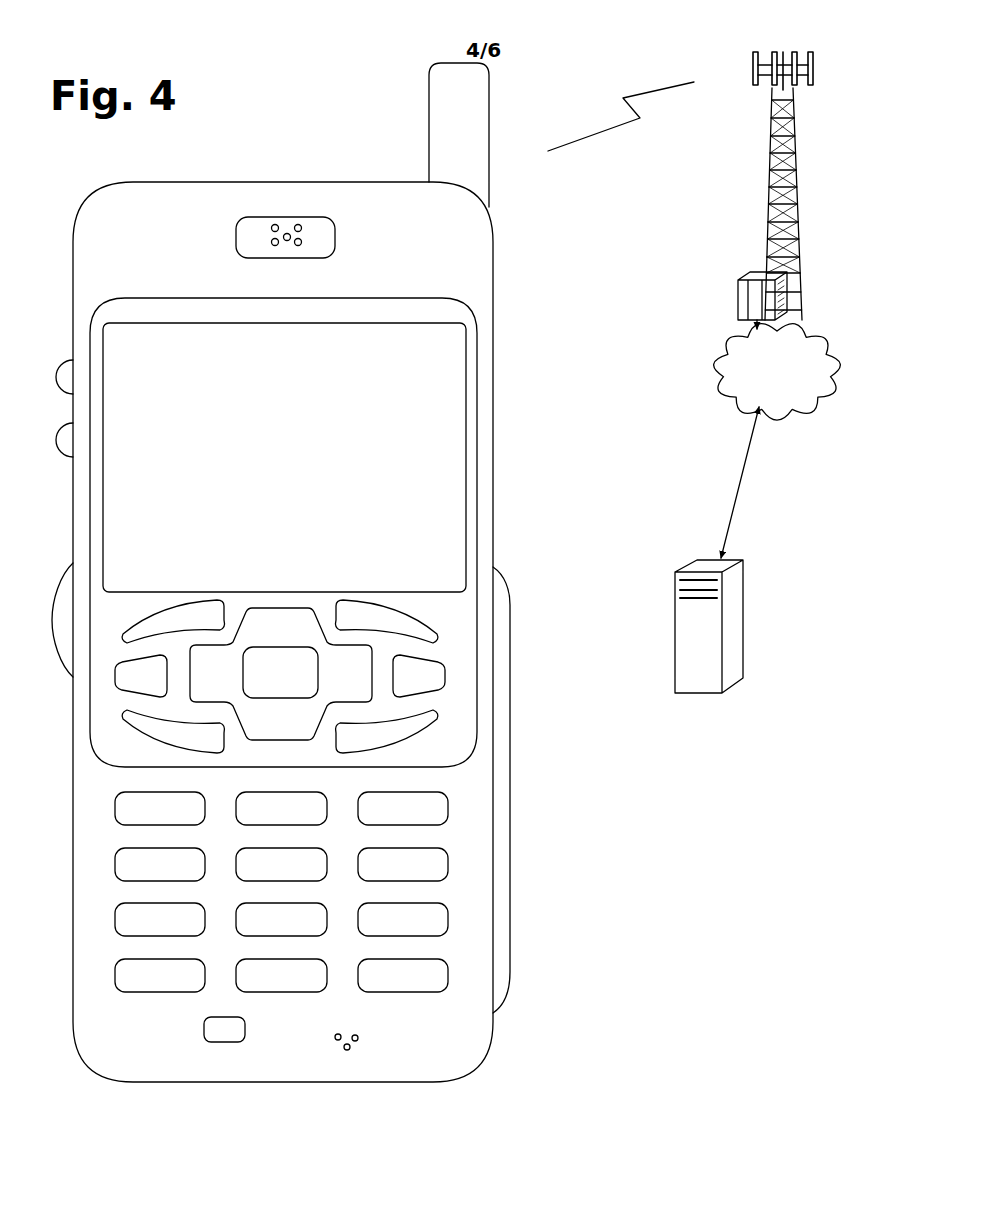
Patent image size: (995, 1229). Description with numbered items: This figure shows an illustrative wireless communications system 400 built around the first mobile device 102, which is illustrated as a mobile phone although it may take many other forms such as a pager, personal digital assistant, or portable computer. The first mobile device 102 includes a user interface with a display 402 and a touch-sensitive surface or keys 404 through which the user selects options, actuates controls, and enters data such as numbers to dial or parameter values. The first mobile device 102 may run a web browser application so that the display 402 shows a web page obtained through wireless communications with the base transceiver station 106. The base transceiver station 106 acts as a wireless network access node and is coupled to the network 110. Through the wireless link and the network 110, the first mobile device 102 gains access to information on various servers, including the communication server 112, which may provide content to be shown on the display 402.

The wireless communications system 400 is at (243, 79).
The first mobile device 102 is at (133, 1082).
The display 402 is at (466, 373).
The keys 404 is at (510, 768).
The base transceiver station 106 is at (767, 197).
The network 110 is at (714, 393).
The communication server 112 is at (697, 693).